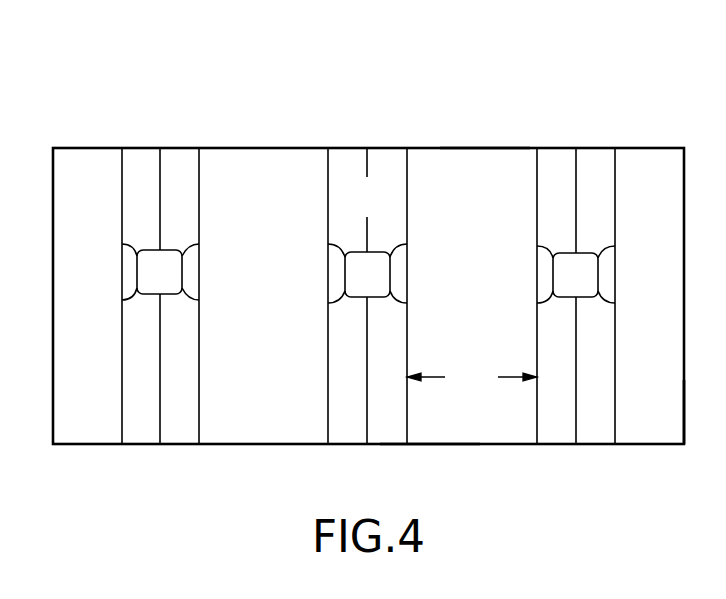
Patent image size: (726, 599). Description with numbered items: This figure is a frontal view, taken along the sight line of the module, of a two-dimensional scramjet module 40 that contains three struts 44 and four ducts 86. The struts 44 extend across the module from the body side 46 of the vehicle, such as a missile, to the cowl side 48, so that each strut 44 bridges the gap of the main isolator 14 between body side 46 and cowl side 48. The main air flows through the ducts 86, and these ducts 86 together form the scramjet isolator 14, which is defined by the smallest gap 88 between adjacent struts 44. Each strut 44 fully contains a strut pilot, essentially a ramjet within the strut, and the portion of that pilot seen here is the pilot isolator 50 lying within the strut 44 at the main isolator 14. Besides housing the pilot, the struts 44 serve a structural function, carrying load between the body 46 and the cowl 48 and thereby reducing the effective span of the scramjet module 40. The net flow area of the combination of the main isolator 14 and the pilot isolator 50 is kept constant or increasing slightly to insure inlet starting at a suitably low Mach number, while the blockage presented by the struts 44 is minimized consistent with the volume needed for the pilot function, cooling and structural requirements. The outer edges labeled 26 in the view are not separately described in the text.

The scramjet module 40 is at (247, 129).
The substrate / wafer 26 is at (472, 148).
The body side 46 is at (365, 125).
The strut 44 is at (354, 212).
The pilot isolator 50 is at (354, 288).
The main isolator 14 is at (459, 327).
The duct 86 is at (252, 377).
The smallest gap 88 is at (458, 390).
The cowl side 48 is at (420, 488).